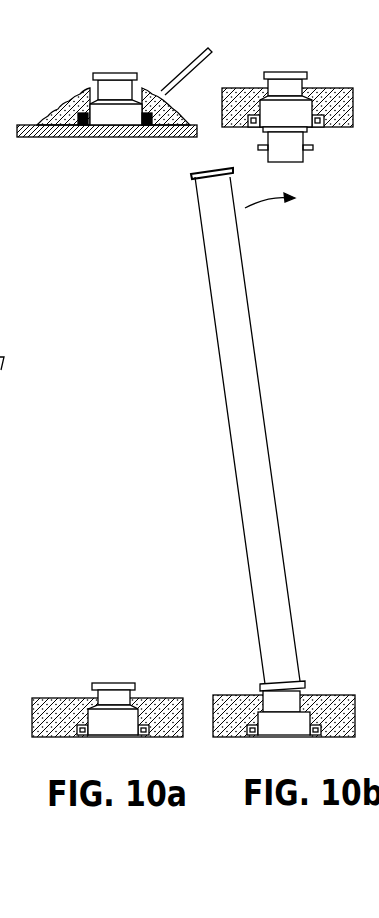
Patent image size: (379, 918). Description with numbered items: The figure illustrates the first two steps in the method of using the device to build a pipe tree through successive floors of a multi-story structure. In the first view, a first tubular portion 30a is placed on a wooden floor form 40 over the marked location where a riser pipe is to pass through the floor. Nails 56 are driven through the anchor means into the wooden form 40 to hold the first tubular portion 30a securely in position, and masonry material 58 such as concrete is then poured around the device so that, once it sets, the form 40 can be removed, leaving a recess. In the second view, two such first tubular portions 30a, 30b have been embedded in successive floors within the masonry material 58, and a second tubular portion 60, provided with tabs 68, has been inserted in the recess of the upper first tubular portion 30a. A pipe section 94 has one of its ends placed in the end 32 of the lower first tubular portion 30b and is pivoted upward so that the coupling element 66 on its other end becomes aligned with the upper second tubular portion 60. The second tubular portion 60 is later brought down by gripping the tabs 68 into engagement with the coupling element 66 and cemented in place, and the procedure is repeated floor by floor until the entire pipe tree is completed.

In FIG. 10A, the first tubular portion 30a is at (100, 112).
In FIG. 10B, the first tubular portion 30a is at (297, 110).
In FIG. 10A, the first tubular portion 30b is at (125, 720).
In FIG. 10B, the first tubular portion 30b is at (262, 700).
In FIG. 10A, the end of the first tubular portion 32 is at (112, 73).
In FIG. 10B, the end of the first tubular portion 32 is at (285, 72).
In FIG. 10A, the wooden floor form 40 is at (38, 138).
In FIG. 10A, the nails 56 is at (85, 127).
In FIG. 10A, the masonry material 58 is at (52, 107).
In FIG. 10B, the masonry material 58 is at (248, 90).
In FIG. 10B, the second tubular portion 60 is at (292, 141).
In FIG. 10B, the coupling element 66 is at (191, 178).
In FIG. 10B, the tabs 68 is at (258, 147).
In FIG. 10B, the pipe section 94 is at (245, 352).